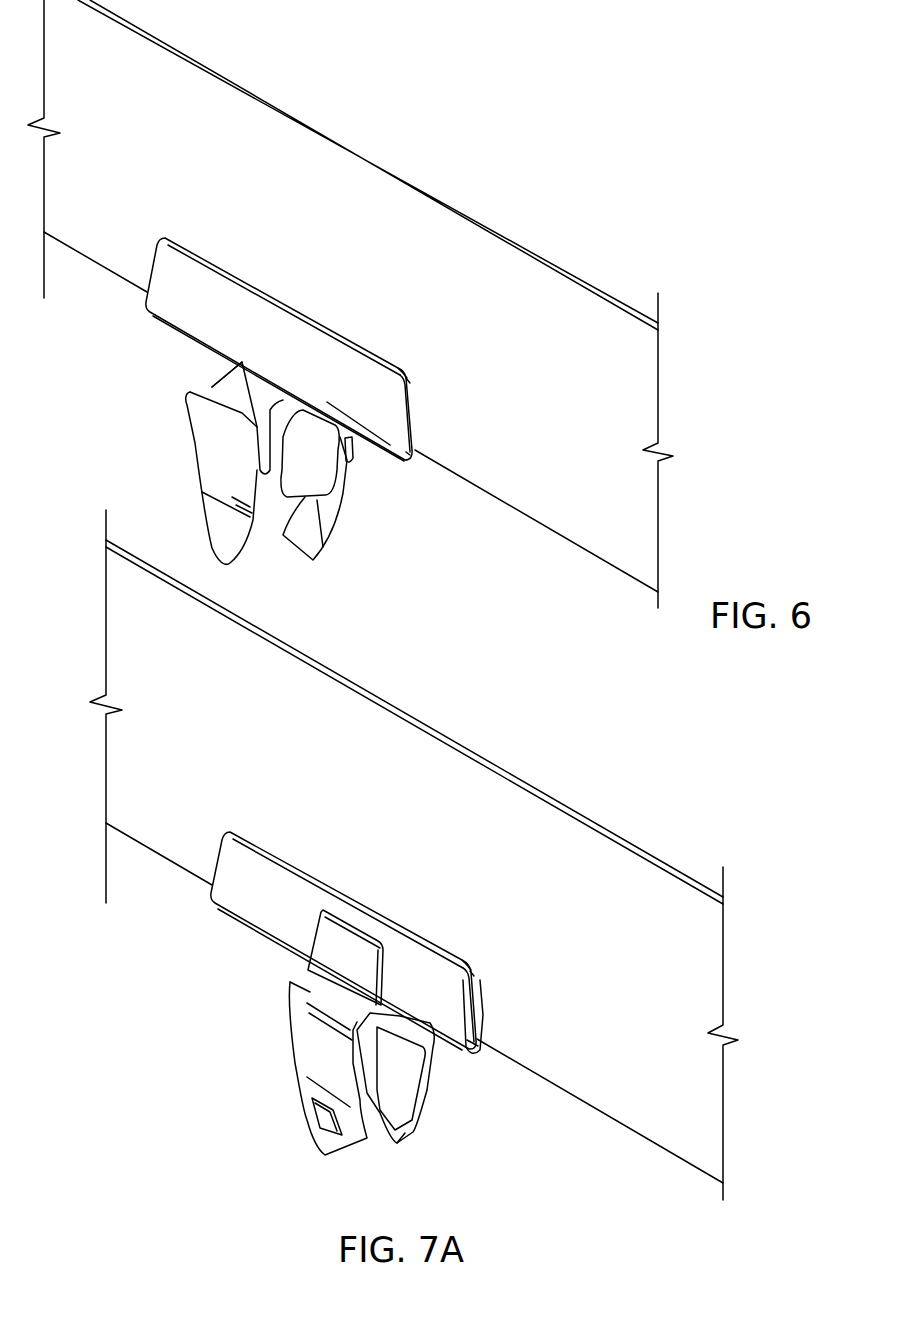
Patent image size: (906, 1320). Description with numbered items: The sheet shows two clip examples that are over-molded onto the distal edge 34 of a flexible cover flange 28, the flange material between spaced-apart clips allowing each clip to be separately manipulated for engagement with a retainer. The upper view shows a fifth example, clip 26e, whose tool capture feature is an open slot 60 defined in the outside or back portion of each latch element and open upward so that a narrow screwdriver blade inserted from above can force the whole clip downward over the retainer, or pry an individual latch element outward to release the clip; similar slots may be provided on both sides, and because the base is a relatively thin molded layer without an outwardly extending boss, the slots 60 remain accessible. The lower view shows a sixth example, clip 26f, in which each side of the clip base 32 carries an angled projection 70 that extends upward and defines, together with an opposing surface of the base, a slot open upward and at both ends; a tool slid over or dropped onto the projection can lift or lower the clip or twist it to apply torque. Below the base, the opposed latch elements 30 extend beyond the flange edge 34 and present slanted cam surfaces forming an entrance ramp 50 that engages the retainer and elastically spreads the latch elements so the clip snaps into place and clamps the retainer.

In FIG. 6, the clip 26e is at (279, 401).
In FIG. 6, the open slot 60 is at (192, 374).
In FIG. 7A, the clip 26f is at (392, 888).
In FIG. 7A, the cover flange 28 is at (150, 848).
In FIG. 7A, the distal edge 34 is at (667, 1152).
In FIG. 7A, the angled projection 70 is at (290, 918).
In FIG. 7A, the entrance ramp 50 is at (343, 1155).
In FIG. 7A, the latch element 30 is at (433, 1090).
In FIG. 7A, the clip base 32 is at (480, 1045).